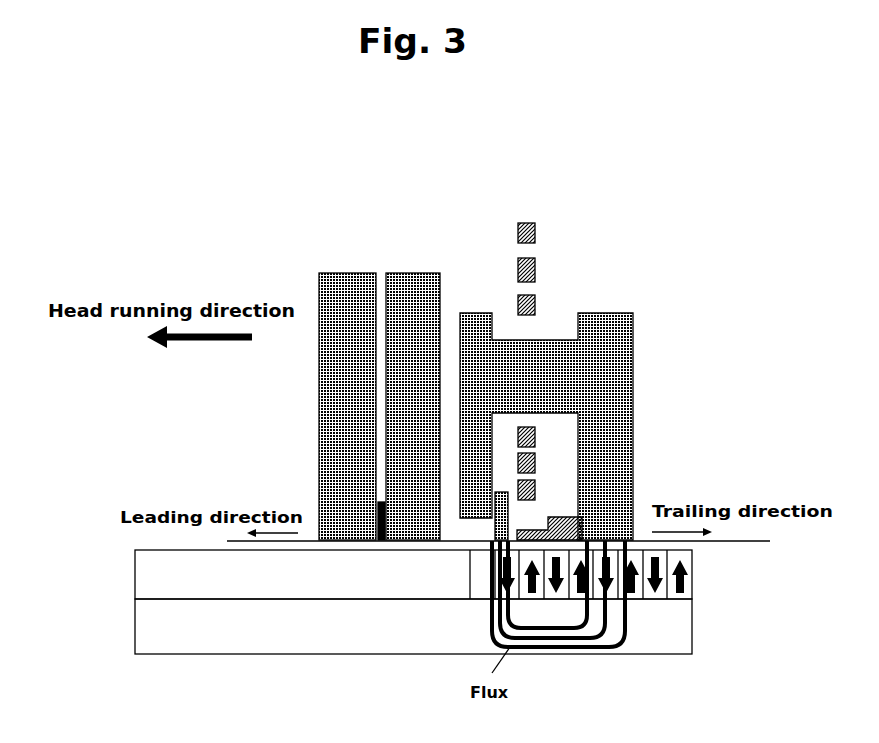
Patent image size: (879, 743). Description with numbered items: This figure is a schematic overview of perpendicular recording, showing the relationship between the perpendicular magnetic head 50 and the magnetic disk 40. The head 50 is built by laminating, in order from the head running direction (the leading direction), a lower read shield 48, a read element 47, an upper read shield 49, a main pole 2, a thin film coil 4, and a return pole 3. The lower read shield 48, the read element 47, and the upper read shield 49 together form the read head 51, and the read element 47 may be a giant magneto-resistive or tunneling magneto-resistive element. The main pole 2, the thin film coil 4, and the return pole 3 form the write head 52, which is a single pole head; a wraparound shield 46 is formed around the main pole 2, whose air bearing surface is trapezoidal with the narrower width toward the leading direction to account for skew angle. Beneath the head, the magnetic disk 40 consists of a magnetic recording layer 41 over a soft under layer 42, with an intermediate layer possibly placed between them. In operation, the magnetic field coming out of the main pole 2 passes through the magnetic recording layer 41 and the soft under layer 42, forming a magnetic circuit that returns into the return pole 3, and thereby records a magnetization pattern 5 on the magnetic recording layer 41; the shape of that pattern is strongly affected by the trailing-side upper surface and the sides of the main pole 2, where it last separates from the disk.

The main pole 2 is at (490, 540).
The return pole 3 is at (634, 455).
The thin film coil 4 is at (535, 235).
The recorded magnetization 5 is at (692, 585).
The magnetic disk 40 is at (68, 543).
The magnetic recording layer 41 is at (135, 578).
The soft under layer 42 is at (140, 623).
The wraparound shield 46 is at (562, 515).
The read element 47 is at (378, 517).
The lower read shield 48 is at (341, 273).
The upper read shield 49 is at (405, 273).
The perpendicular magnetic head 50 is at (627, 158).
The read head 51 is at (433, 203).
The write head 52 is at (628, 203).